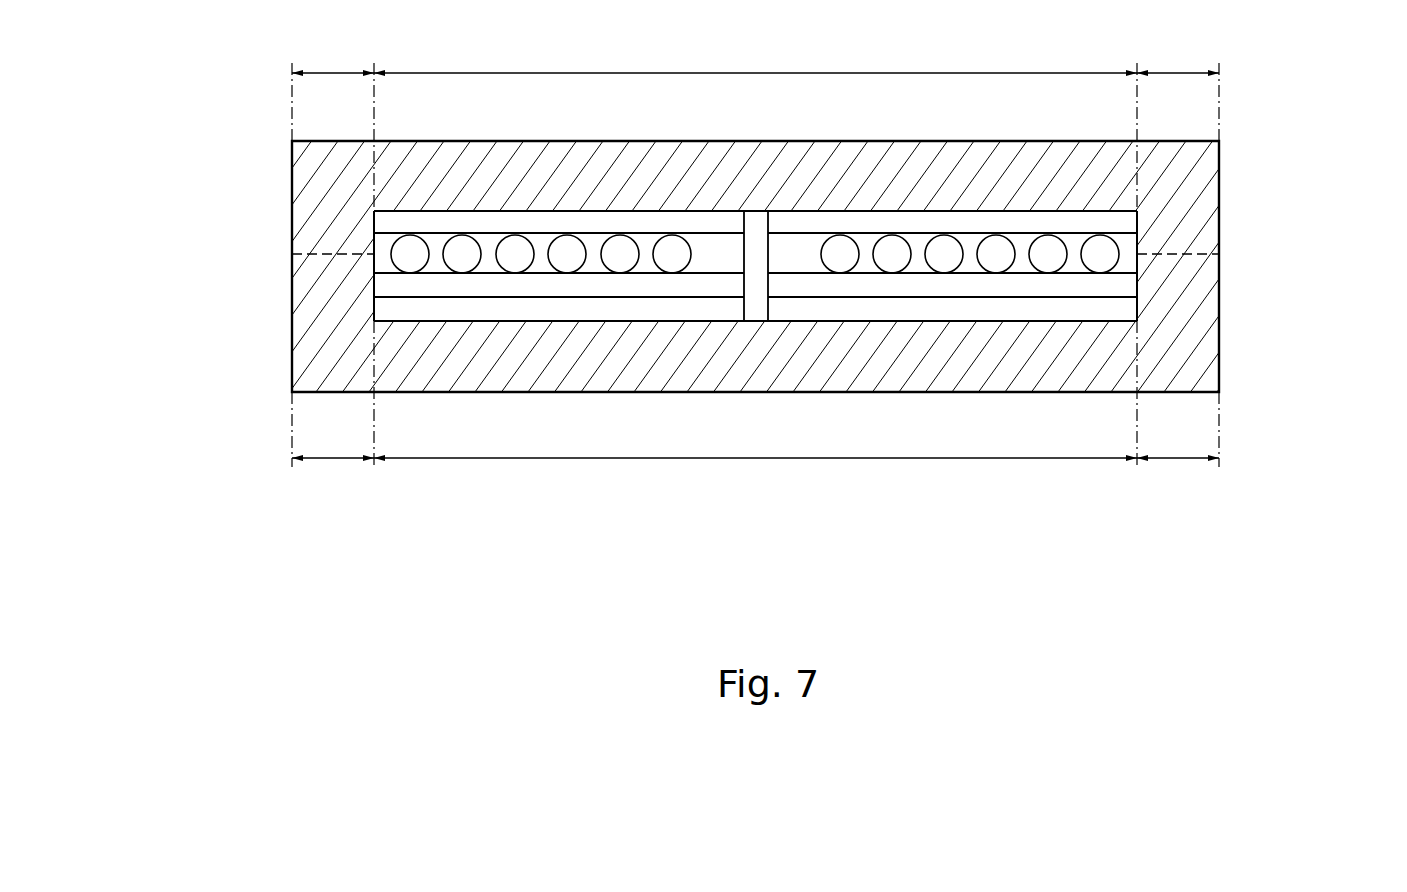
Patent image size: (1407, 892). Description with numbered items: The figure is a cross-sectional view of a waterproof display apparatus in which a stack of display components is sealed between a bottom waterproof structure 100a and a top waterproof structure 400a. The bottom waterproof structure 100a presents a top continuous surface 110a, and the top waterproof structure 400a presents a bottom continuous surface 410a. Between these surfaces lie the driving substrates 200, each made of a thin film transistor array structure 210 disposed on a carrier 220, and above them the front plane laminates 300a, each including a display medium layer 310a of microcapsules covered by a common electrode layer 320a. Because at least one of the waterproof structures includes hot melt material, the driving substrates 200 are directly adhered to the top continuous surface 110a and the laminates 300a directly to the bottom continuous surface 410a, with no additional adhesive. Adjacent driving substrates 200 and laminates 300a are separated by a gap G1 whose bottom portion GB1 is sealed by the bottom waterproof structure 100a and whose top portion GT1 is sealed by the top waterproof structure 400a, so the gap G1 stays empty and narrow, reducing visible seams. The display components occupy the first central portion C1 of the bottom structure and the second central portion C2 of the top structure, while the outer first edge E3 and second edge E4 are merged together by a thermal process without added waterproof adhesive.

The bottom waterproof structure 100a is at (313, 372).
The top continuous surface 110a is at (413, 322).
The driving substrate 200 is at (596, 307).
The thin film transistor array structure 210 is at (388, 284).
The carrier 220 is at (388, 310).
The front plane laminate 300a is at (581, 205).
The display medium layer 310a is at (383, 243).
The common electrode layer 320a is at (388, 222).
The top waterproof structure 400a is at (1195, 203).
The bottom continuous surface 410a is at (1118, 213).
The gap G1 is at (783, 305).
The top portion of the gap GT1 is at (758, 205).
The bottom portion of the gap GB1 is at (752, 333).
The first edge E3 is at (755, 475).
The second edge E4 is at (755, 58).
The first central portion C1 is at (755, 474).
The second central portion C2 is at (755, 58).